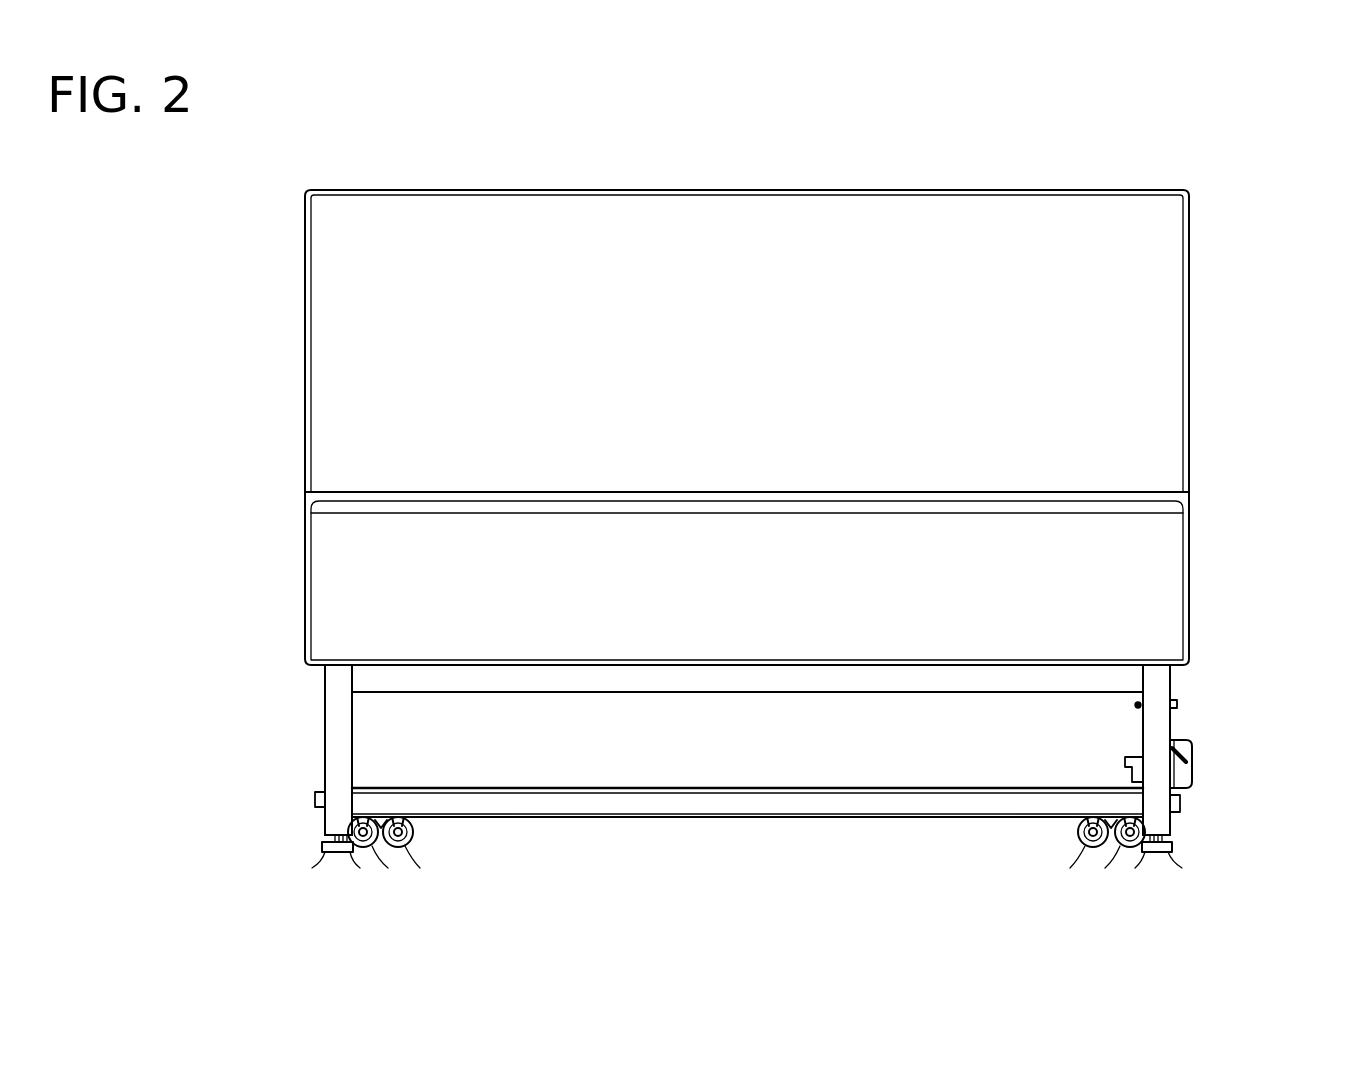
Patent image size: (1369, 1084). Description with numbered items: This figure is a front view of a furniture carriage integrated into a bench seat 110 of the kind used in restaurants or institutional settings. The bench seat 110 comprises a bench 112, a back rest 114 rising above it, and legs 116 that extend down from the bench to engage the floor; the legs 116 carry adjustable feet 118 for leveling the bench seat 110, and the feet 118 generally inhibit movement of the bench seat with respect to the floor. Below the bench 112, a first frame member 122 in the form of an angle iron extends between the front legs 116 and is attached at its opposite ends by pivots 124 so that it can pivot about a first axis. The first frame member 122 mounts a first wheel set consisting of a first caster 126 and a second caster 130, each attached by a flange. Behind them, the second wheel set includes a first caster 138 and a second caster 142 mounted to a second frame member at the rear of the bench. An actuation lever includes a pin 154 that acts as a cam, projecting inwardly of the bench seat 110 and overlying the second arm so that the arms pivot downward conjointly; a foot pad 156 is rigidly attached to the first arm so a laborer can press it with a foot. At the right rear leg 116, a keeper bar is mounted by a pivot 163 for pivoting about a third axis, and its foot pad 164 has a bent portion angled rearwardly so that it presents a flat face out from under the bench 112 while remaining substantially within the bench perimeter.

The bench seat 110 is at (1292, 210).
The bench 112 is at (432, 510).
The back rest 114 is at (612, 233).
The legs 116 is at (337, 716).
The feet 118 is at (330, 848).
The first frame member 122 is at (663, 788).
The pivots 124 is at (316, 800).
The first caster 126 is at (405, 849).
The second caster 130 is at (1085, 846).
The first caster 138 is at (362, 852).
The second caster 142 is at (1125, 852).
The pin 154 is at (1135, 757).
The foot pad 156 is at (1192, 746).
The pivot 163 is at (1178, 703).
The foot pad 164 is at (1192, 778).